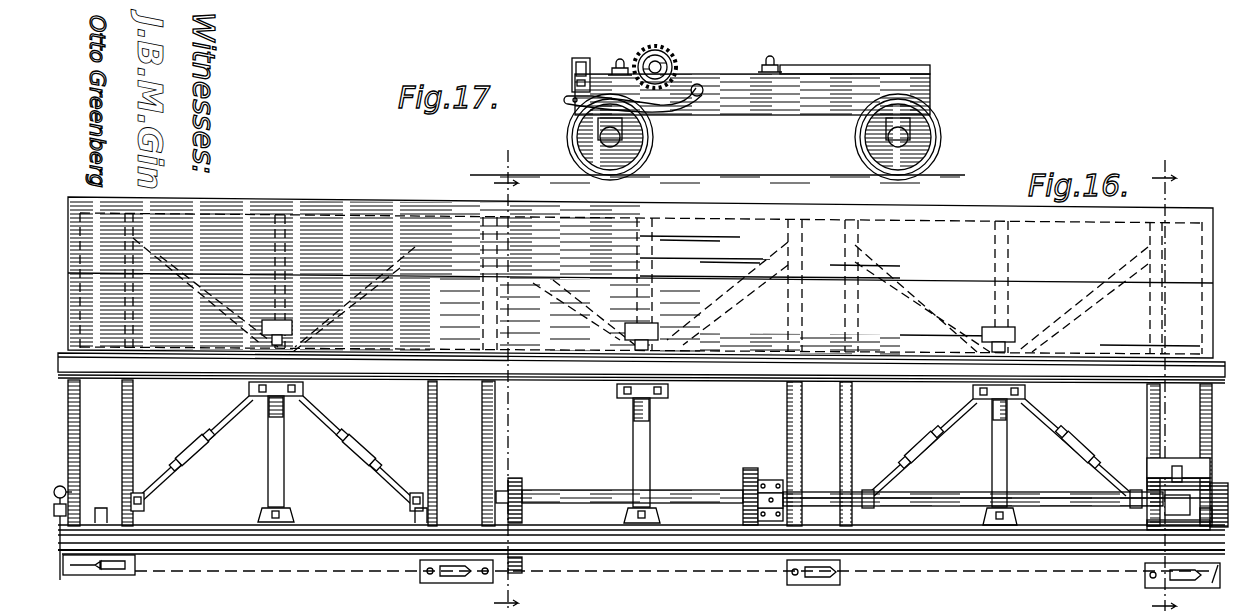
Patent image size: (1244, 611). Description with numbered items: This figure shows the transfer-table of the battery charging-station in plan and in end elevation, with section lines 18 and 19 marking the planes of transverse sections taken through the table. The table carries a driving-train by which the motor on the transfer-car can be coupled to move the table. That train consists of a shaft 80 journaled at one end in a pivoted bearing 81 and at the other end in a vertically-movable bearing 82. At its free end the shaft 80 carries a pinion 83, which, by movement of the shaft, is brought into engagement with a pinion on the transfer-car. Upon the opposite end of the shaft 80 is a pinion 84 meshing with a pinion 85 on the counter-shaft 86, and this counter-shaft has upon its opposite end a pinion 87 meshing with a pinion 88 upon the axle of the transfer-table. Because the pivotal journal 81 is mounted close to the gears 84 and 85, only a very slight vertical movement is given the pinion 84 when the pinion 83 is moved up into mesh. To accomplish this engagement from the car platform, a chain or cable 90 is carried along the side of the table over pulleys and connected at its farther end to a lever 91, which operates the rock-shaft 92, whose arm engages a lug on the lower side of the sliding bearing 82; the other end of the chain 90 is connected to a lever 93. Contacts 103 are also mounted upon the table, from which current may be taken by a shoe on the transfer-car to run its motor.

In FIG. 16, the section line 18 18 is at (1164, 375).
In FIG. 16, the section line 19 19 is at (505, 379).
In FIG. 17, the shaft 80 is at (661, 65).
In FIG. 16, the shaft 80 is at (948, 493).
In FIG. 16, the pivoted bearing 81 is at (778, 496).
In FIG. 16, the vertically-movable bearing 82 is at (1158, 480).
In FIG. 17, the pinion 83 is at (649, 57).
In FIG. 16, the pinion 83 is at (1218, 483).
In FIG. 16, the pinion 84 is at (744, 490).
In FIG. 16, the pinion 85 is at (760, 480).
In FIG. 16, the counter-shaft 86 is at (604, 480).
In FIG. 16, the pinion 87 is at (520, 480).
In FIG. 16, the pinion 88 is at (520, 570).
In FIG. 16, the chain or cable 90 is at (338, 572).
In FIG. 17, the lever 91 is at (568, 100).
In FIG. 16, the lever 91 is at (1206, 588).
In FIG. 16, the rock-shaft 92 is at (1160, 462).
In FIG. 16, the lever 93 is at (60, 580).
In FIG. 16, the contacts 103 is at (632, 323).